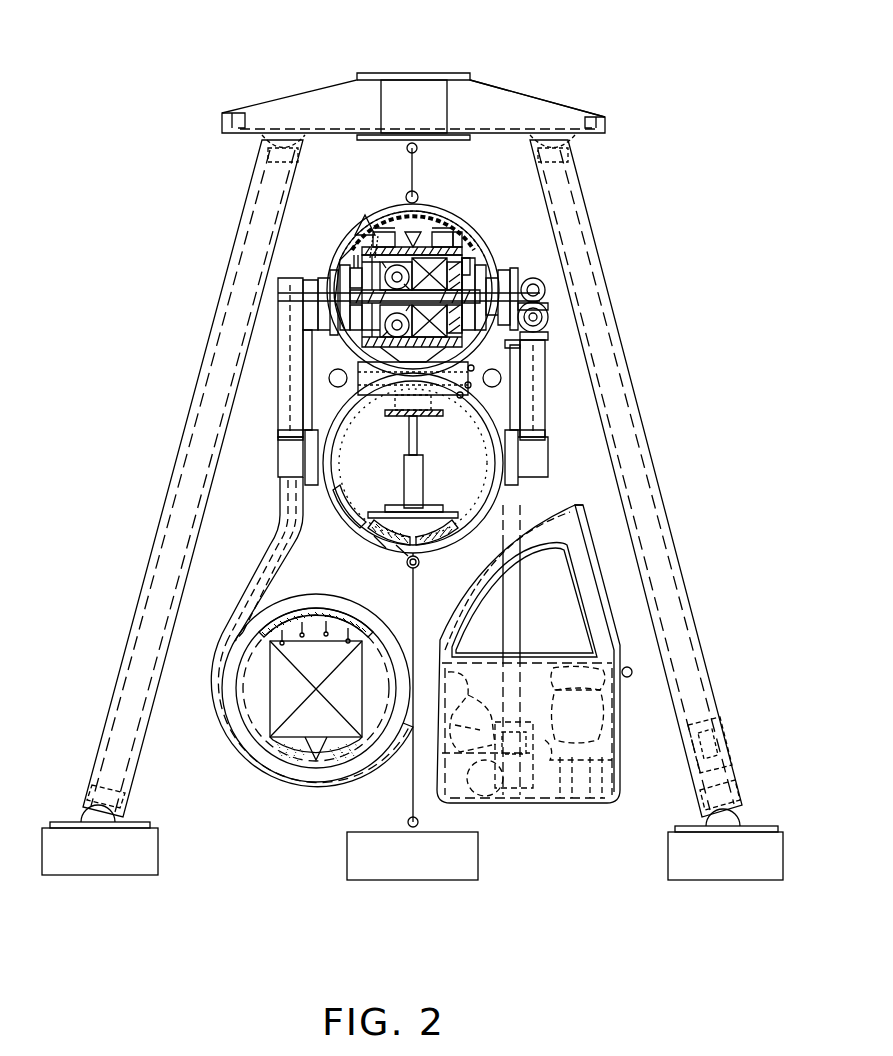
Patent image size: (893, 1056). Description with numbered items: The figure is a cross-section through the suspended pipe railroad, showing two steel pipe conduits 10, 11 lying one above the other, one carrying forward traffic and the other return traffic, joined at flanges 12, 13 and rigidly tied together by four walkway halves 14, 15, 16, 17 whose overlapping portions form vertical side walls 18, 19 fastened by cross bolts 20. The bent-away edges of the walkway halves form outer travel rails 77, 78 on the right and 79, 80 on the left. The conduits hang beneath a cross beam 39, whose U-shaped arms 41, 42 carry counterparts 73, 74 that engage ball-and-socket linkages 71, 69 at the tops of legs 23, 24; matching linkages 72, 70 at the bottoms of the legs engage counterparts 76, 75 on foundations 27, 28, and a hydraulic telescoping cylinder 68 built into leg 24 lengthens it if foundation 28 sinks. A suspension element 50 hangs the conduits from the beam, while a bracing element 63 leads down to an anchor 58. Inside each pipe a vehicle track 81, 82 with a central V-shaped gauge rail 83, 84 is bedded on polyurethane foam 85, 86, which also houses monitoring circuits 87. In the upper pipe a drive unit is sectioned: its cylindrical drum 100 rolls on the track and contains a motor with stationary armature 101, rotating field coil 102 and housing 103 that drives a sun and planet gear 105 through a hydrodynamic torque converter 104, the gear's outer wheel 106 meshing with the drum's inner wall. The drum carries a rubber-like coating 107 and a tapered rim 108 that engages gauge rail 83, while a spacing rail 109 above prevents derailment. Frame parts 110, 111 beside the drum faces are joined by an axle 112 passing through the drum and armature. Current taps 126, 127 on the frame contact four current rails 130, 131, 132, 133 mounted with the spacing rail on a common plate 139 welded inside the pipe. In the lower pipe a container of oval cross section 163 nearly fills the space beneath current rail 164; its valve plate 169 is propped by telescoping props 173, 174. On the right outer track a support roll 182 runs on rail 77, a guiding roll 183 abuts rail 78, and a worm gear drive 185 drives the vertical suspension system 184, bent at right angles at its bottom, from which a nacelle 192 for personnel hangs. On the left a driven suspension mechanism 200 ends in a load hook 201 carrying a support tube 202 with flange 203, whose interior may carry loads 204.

The pipe conduit 10 is at (518, 292).
The pipe conduit 11 is at (466, 532).
The flange 12 is at (470, 262).
The flange 13 is at (488, 500).
The walkway half 14 is at (352, 320).
The walkway half 15 is at (530, 396).
The walkway half 16 is at (360, 392).
The walkway half 17 is at (424, 470).
The side wall 18 is at (300, 420).
The side wall 19 is at (475, 393).
The cross bolt 20 is at (470, 384).
The leg 23 is at (118, 643).
The leg 24 is at (690, 614).
The foundation 27 is at (112, 870).
The foundation 28 is at (738, 870).
The cross beam 39 is at (415, 90).
The arm 41 is at (322, 108).
The arm 42 is at (540, 120).
The suspension rod 50 is at (414, 180).
The counterweight 58 is at (424, 870).
The pendulum rod 63 is at (412, 802).
The hydraulic telescoping cylinder 68 is at (690, 764).
The ball and socket type linkage 69 is at (570, 154).
The ball and socket type linkage 70 is at (703, 800).
The ball and socket type linkage 71 is at (262, 152).
The ball and socket type linkage 72 is at (90, 780).
The counterpart 73 is at (538, 135).
The counterpart 74 is at (288, 130).
The counterpart 75 is at (740, 818).
The counterpart 76 is at (82, 812).
The travel rail 77 is at (520, 370).
The travel rail 78 is at (526, 440).
The travel rail 79 is at (380, 310).
The travel rail 80 is at (300, 436).
The vehicle track 81 is at (412, 325).
The vehicle track 82 is at (372, 530).
The gauge rail 83 is at (487, 377).
The gauge rail 84 is at (426, 556).
The bolt hole 85 is at (346, 378).
The polyurethane foam 86 is at (396, 552).
The circuits 87 is at (482, 360).
The cylindrical drum 100 is at (486, 250).
The armature 101 is at (550, 322).
The field coil 102 is at (548, 288).
The motor housing 103 is at (498, 280).
The hydrodynamic torque converter 104 is at (302, 300).
The sun and planet gear 105 is at (328, 285).
The outer wheel 106 is at (352, 262).
The rubber-like coating 107 is at (350, 250).
The protruding rim 108 is at (305, 398).
The spacing rail 109 is at (427, 226).
The frame part 110 is at (345, 290).
The frame part 111 is at (530, 358).
The axle 112 is at (365, 265).
The current tap 126 is at (455, 232).
The current tap 127 is at (350, 228).
The current rail 130 is at (365, 210).
The current rail 131 is at (398, 240).
The current rail 132 is at (460, 230).
The current rail 133 is at (468, 228).
The common plate 139 is at (376, 228).
The oval cross section 163 is at (350, 506).
The current rail 164 is at (400, 418).
The valve plate 169 is at (428, 416).
The telescoping prop 173 is at (410, 496).
The telescoping prop 174 is at (408, 445).
The support roll 182 is at (550, 305).
The guiding roll 183 is at (498, 460).
The suspension system 184 is at (528, 420).
The worm gear drive 185 is at (555, 340).
The nacelle 192 is at (545, 790).
The vertical suspension mechanism 200 is at (282, 492).
The load hook 201 is at (220, 726).
The support tube 202 is at (262, 604).
The flange 203 is at (312, 608).
The loads 204 is at (282, 720).